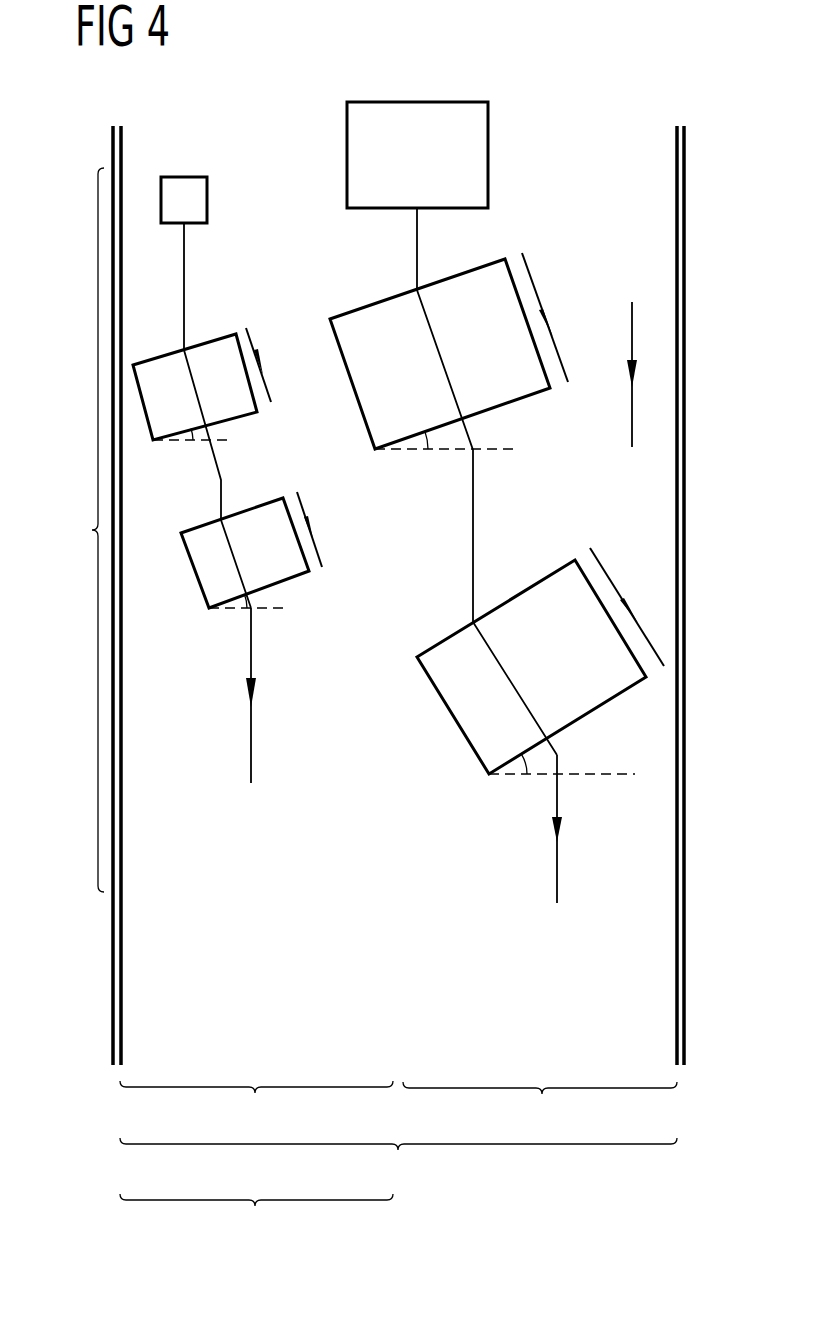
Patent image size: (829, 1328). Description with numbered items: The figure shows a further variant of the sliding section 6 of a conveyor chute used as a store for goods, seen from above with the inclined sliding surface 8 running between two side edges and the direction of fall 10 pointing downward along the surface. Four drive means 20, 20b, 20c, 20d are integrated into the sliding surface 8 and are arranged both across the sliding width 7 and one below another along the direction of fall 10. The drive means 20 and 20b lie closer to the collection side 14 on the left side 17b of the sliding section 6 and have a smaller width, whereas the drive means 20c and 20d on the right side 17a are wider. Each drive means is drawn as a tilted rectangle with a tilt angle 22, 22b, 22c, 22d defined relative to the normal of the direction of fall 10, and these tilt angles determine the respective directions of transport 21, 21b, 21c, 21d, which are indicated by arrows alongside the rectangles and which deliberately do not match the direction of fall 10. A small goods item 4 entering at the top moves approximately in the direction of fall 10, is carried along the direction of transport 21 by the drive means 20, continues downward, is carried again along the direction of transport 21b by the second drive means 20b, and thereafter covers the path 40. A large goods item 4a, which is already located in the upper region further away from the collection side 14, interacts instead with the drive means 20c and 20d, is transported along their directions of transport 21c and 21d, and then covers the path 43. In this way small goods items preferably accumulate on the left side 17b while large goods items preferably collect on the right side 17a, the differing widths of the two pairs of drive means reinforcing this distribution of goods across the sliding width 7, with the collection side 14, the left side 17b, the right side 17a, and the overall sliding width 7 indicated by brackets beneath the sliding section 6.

The goods item 4 is at (183, 177).
The large goods item 4a is at (490, 156).
The sliding section 6 is at (87, 530).
The sliding width 7 is at (398, 1164).
The sliding surface 8 is at (638, 493).
The direction of fall 10 is at (632, 333).
The collection side 14 is at (256, 1221).
The right side 17a is at (540, 1109).
The left side 17b is at (256, 1108).
The drive means 20 is at (157, 352).
The second drive means 20b is at (198, 525).
The drive means 20c is at (373, 302).
The drive means 20d is at (445, 638).
The direction of transport 21 is at (252, 341).
The direction of transport 21b is at (300, 502).
The direction of transport 21c is at (535, 278).
The direction of transport 21d is at (603, 568).
The tilt angle 22 is at (211, 442).
The tilt angle 22b is at (250, 607).
The tilt angle 22c is at (433, 440).
The tilt angle 22d is at (528, 763).
The path 40 is at (253, 733).
The path 43 is at (558, 870).